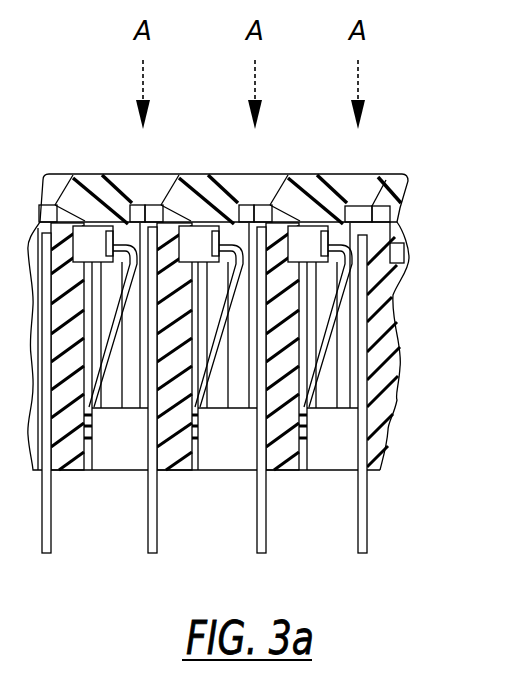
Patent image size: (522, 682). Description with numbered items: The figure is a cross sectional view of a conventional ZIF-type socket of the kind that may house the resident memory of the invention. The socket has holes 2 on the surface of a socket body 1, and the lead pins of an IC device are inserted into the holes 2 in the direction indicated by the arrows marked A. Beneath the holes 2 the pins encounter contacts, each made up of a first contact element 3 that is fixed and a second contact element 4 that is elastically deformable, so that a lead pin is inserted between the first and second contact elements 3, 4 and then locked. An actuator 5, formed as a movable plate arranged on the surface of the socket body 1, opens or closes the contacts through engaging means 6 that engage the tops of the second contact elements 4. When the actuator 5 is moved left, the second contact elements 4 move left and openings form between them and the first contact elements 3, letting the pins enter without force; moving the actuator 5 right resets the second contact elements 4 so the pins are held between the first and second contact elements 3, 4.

The socket body 1 is at (402, 438).
The holes 2 is at (238, 215).
The first contact element 3 is at (365, 298).
The second contact element 4 is at (320, 343).
The actuator 5 is at (307, 185).
The engaging means 6 is at (329, 236).